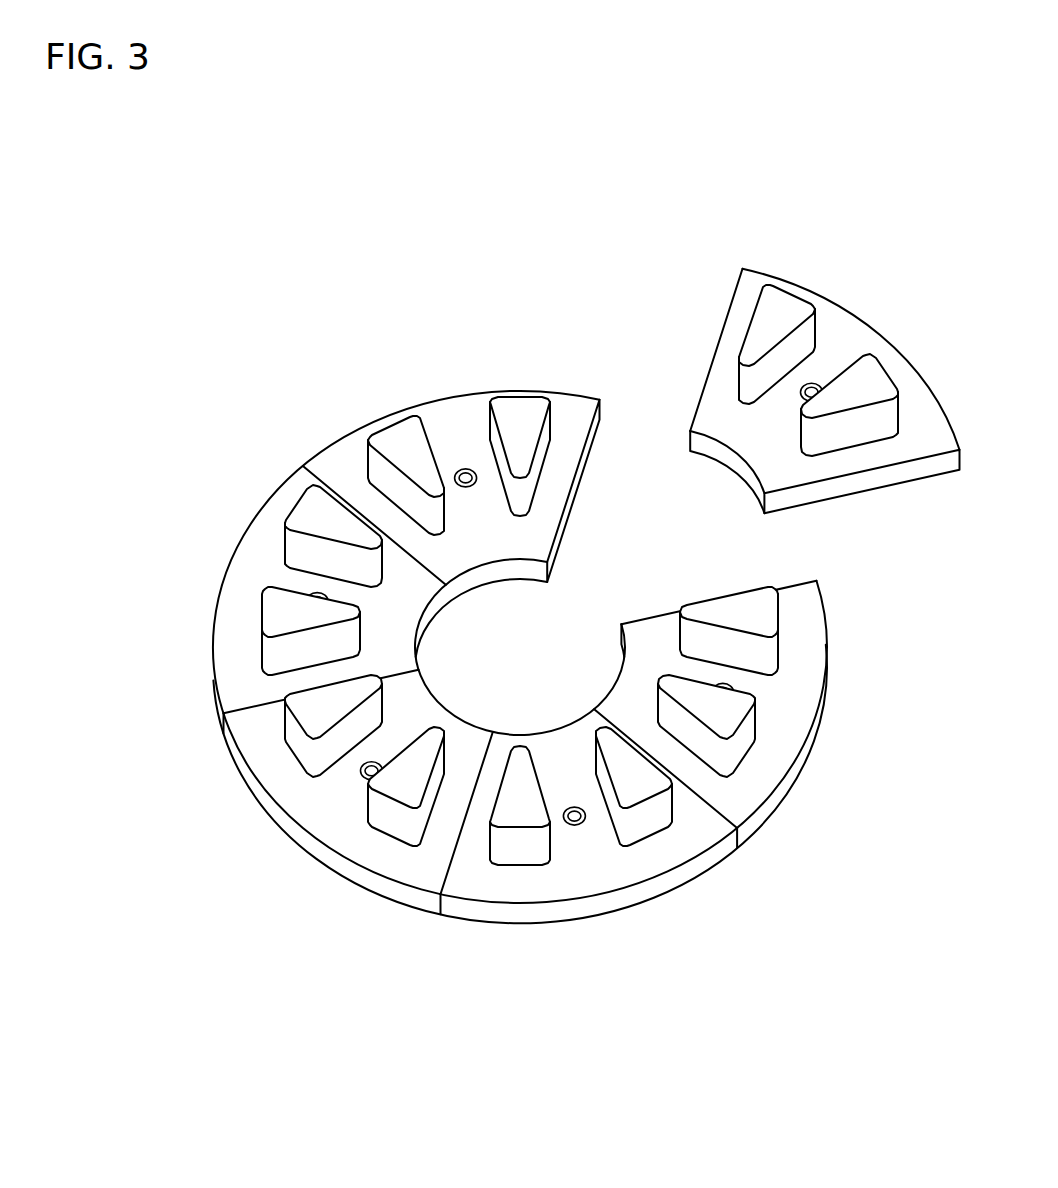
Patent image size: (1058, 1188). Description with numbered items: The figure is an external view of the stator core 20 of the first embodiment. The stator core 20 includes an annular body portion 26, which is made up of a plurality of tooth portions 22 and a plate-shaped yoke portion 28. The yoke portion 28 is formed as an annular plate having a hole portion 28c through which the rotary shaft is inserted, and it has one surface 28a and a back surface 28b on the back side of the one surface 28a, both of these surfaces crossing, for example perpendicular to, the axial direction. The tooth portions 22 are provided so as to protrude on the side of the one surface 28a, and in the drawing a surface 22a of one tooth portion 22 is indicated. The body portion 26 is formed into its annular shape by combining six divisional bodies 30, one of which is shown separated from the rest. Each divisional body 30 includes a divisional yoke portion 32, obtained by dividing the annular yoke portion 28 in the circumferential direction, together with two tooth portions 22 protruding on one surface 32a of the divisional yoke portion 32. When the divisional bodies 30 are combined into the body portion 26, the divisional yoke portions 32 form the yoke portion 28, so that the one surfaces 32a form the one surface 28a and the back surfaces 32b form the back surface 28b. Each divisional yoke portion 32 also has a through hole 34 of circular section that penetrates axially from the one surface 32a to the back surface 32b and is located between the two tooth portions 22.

The stator core 20 is at (537, 603).
The tooth portion 22 is at (580, 556).
The magnet upper surface 22a is at (362, 690).
The body portion 26 is at (471, 699).
The yoke portion 28 is at (471, 699).
The one surface 28a is at (232, 695).
The back surface 28b is at (610, 914).
The hole portion 28c is at (480, 580).
The divisional body 30 is at (592, 560).
The divisional yoke portion 32 is at (746, 293).
The one surface 32a is at (895, 375).
The back surface 32b is at (848, 496).
The through hole 34 is at (465, 468).